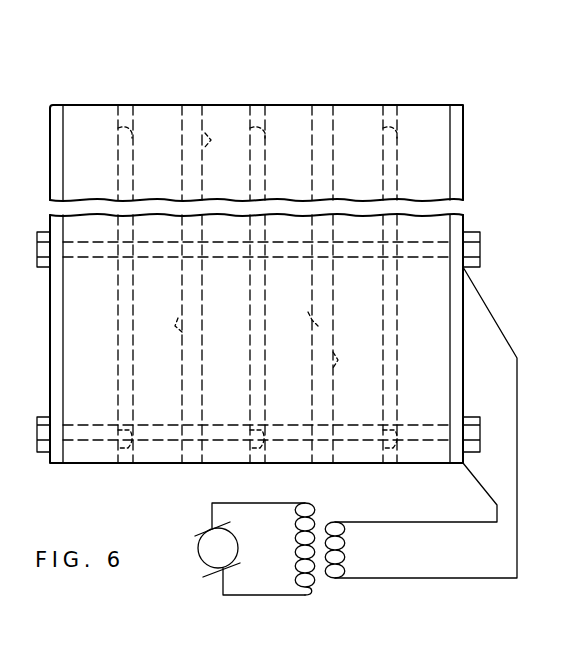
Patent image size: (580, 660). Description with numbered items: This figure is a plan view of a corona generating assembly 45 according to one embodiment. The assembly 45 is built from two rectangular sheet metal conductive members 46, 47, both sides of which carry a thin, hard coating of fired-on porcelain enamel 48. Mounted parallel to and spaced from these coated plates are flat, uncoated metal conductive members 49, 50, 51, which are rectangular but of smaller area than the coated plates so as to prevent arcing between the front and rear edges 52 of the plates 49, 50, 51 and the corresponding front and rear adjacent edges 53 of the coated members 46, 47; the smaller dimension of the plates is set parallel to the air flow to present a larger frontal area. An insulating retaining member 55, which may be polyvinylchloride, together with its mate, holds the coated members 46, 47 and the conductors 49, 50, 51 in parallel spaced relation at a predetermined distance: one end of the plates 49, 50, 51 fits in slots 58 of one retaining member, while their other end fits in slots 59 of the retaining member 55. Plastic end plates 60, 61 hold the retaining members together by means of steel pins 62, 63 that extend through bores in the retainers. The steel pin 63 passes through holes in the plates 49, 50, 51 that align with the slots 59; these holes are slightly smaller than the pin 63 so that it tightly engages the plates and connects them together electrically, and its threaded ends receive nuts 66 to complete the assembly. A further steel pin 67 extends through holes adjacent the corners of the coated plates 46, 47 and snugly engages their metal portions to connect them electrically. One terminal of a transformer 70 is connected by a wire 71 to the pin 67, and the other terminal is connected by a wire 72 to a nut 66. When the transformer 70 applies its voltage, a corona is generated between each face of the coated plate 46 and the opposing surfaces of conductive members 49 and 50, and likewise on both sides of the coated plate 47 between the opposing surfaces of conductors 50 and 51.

The corona generating assembly 45 is at (307, 75).
The conductive member 46 is at (202, 304).
The conductive member 47 is at (333, 304).
The porcelain enamel coating 48 is at (206, 141).
The conductive member 49 is at (132, 374).
The conductive member 50 is at (266, 304).
The conductive member 51 is at (398, 378).
The front and rear edges 52 is at (120, 126).
The front and rear adjacent edges 53 is at (191, 105).
The retaining member 55 is at (446, 356).
The slots 58 is at (124, 463).
The slots 59 is at (126, 105).
The end plate 60 is at (462, 130).
The end plate 61 is at (56, 118).
The steel pin 62 is at (93, 425).
The steel pin 63 is at (428, 260).
The nuts 66 is at (476, 240).
The steel pin 67 is at (472, 417).
The transformer 70 is at (323, 597).
The wire 71 is at (456, 520).
The wire 72 is at (483, 299).